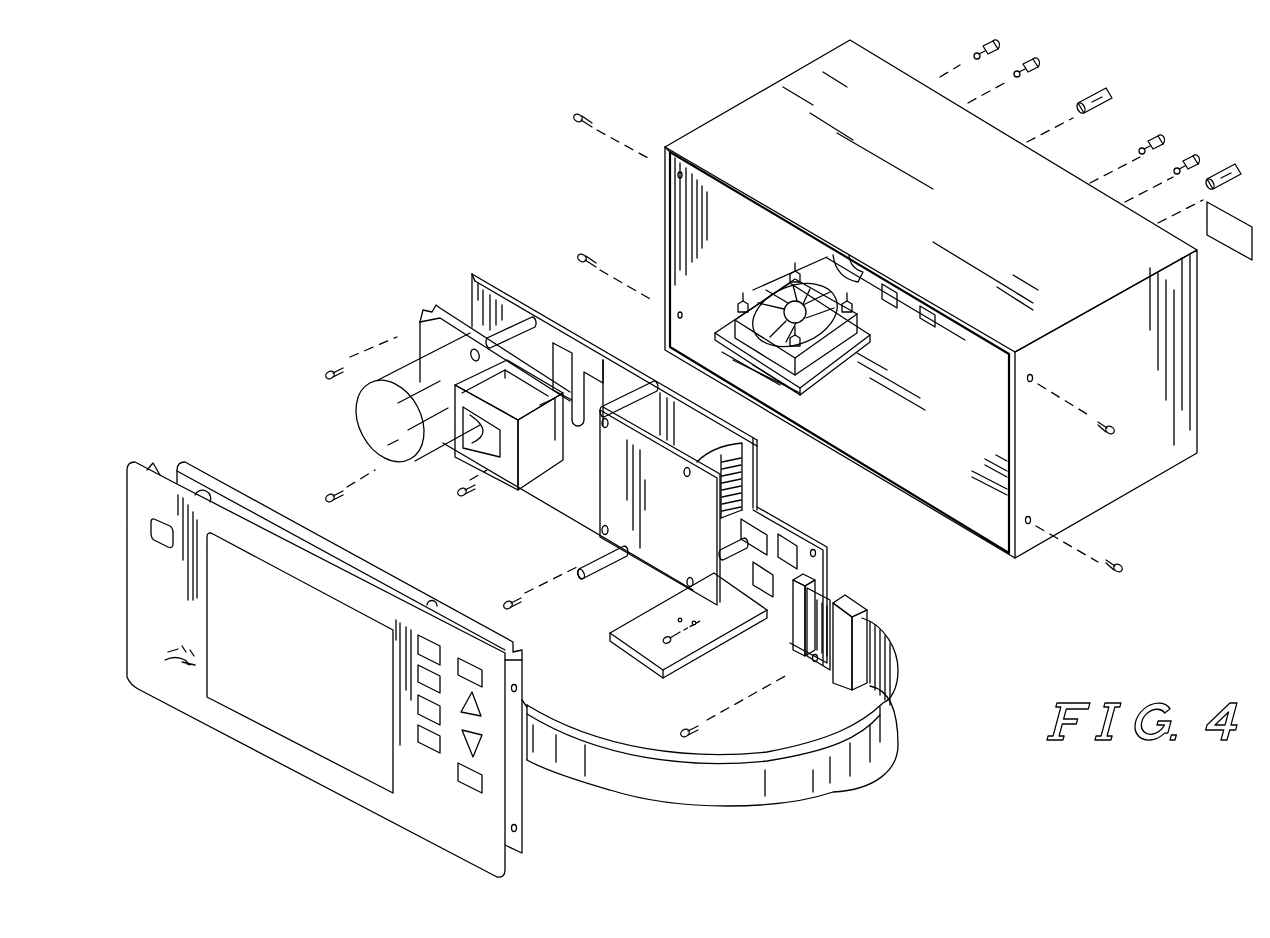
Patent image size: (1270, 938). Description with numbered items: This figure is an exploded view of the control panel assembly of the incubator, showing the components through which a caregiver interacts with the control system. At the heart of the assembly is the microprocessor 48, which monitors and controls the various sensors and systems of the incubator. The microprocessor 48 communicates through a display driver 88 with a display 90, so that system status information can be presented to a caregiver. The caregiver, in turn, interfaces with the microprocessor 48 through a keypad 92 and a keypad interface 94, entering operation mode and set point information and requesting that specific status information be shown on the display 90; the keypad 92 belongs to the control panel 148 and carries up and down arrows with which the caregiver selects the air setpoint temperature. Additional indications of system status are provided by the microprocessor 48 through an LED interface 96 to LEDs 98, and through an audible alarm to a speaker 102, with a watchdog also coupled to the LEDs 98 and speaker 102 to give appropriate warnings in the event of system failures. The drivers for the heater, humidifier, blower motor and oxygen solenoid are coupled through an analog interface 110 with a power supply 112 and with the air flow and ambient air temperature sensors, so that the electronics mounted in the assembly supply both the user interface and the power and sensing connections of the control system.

The microprocessor 48 is at (575, 366).
The display driver 88 is at (788, 546).
The display 90 is at (317, 690).
The keypad 92 is at (430, 787).
The keypad interface 94 is at (776, 586).
The LED interface 96 is at (756, 530).
The LEDs 98 is at (150, 525).
The speaker 102 is at (703, 657).
The analog interface 110 is at (735, 482).
The power supply 112 is at (442, 330).
The control panel 148 is at (217, 710).